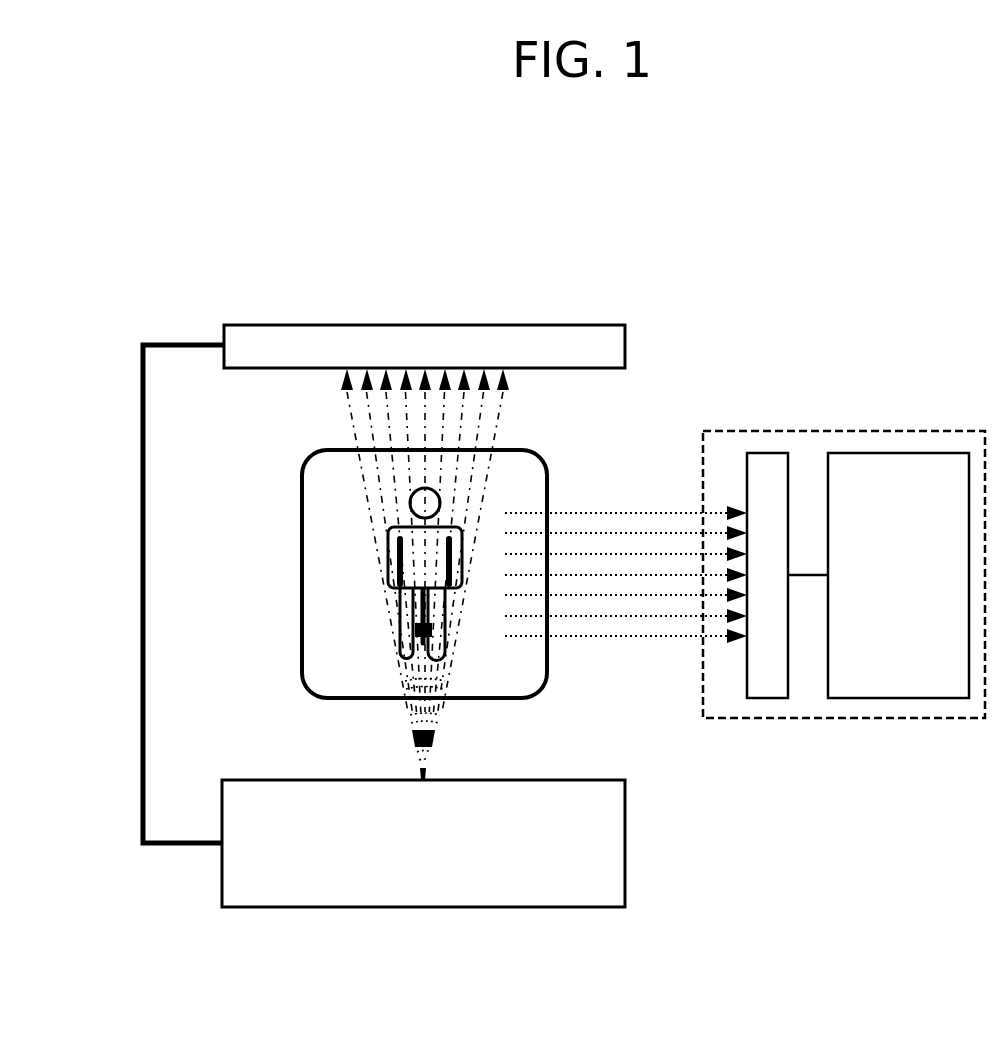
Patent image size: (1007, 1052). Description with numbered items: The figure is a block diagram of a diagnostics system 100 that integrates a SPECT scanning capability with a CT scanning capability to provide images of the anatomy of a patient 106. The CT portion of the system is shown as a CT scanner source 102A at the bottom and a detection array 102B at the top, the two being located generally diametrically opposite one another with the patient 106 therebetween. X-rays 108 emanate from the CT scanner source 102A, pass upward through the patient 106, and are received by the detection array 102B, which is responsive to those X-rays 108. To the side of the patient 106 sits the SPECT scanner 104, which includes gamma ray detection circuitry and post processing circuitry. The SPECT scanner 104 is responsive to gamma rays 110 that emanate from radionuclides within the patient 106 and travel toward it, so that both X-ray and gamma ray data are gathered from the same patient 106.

The diagnostics system 100 is at (610, 152).
The CT scanner source 102A is at (262, 780).
The detection array 102B is at (263, 326).
The SPECT scanner 104 is at (800, 431).
The patient 106 is at (302, 535).
The X-rays 108 is at (457, 740).
The gamma rays 110 is at (652, 503).